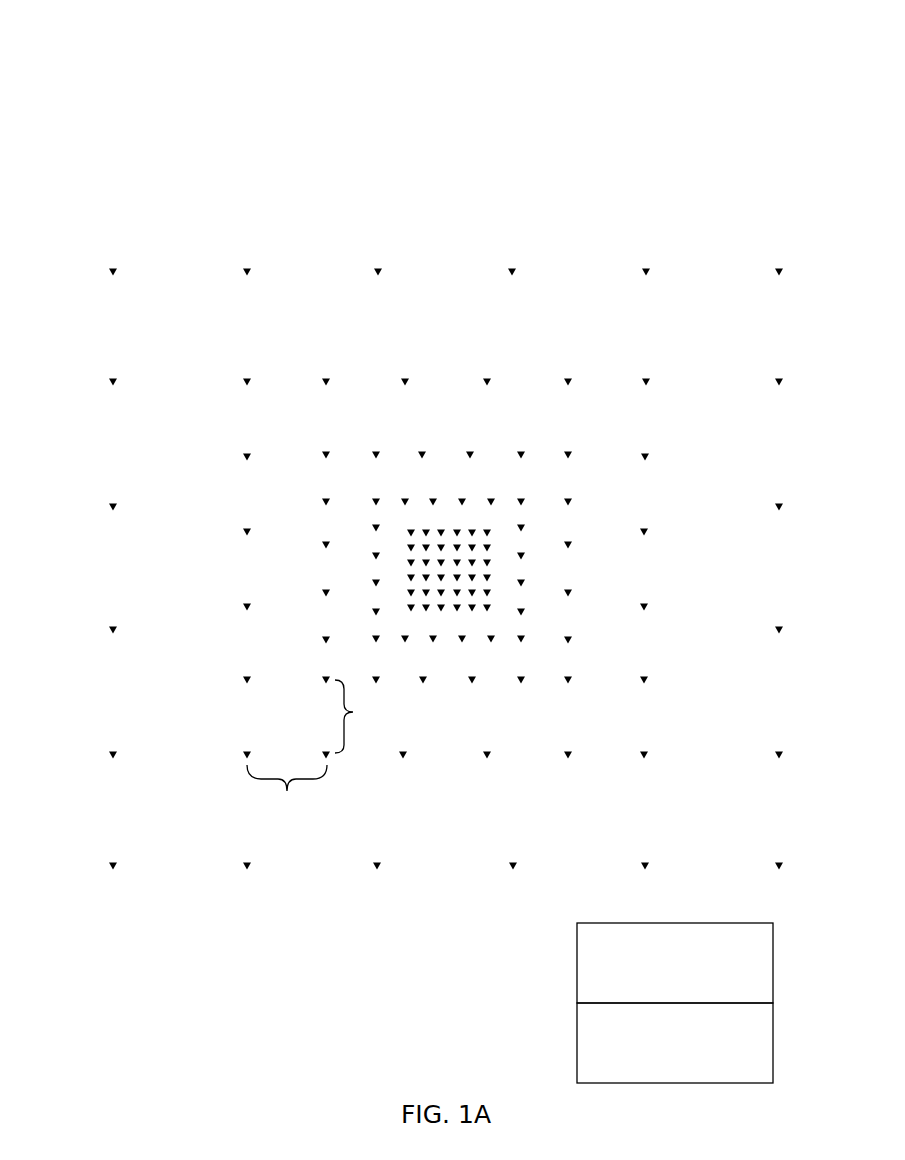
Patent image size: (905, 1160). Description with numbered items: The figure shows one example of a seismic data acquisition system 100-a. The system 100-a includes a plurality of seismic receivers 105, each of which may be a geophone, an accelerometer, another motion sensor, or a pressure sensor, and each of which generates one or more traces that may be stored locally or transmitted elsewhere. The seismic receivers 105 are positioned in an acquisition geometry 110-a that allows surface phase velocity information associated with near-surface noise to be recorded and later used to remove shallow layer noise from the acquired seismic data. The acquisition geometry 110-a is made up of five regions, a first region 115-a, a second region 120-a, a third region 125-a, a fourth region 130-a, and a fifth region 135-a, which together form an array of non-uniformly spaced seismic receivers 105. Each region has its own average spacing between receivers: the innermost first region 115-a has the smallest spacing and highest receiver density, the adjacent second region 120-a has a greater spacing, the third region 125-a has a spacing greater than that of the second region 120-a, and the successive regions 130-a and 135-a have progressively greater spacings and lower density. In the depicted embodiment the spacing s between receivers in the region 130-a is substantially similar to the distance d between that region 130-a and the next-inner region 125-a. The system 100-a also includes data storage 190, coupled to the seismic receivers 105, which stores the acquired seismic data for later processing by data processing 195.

The seismic data acquisition system 100-a is at (729, 36).
The seismic receiver 105 is at (243, 267).
The acquisition geometry 110-a is at (474, 238).
The first region 115-a is at (453, 621).
The second region 120-a is at (452, 647).
The third region 125-a is at (452, 687).
The fourth region 130-a is at (452, 762).
The fifth region 135-a is at (452, 874).
The data storage 190 is at (675, 963).
The data processing 195 is at (675, 1043).